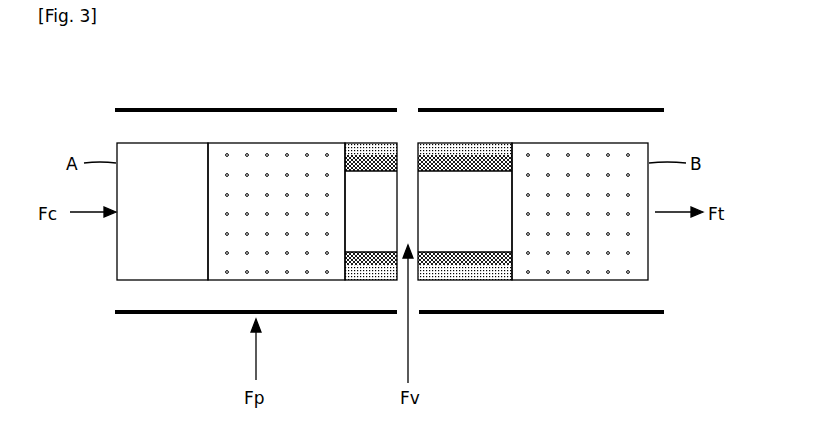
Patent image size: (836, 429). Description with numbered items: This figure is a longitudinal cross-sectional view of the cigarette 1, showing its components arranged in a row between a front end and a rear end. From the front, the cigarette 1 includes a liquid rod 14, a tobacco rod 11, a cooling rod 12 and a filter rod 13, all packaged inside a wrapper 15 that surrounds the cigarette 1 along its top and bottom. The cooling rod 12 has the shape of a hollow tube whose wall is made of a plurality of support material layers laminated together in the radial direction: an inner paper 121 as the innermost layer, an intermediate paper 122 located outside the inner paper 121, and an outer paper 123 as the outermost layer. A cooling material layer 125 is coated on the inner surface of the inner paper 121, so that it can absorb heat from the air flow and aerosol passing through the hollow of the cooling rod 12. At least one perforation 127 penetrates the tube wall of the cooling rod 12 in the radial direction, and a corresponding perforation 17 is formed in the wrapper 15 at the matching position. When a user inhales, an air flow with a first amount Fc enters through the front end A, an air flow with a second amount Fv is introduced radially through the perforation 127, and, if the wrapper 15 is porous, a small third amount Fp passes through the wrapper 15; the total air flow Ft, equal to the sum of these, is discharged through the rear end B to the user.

The cigarette 1 is at (698, 100).
The tobacco rod 11 is at (278, 142).
The cooling rod 12 is at (449, 142).
The inner paper 121 is at (510, 158).
The intermediate paper 122 is at (494, 151).
The outer paper 123 is at (475, 148).
The cooling material layer 125 is at (500, 262).
The perforation 127 is at (417, 280).
The filter rod 13 is at (620, 142).
The liquid rod 14 is at (163, 142).
The wrapper 15 is at (409, 307).
The perforation 17 is at (416, 320).